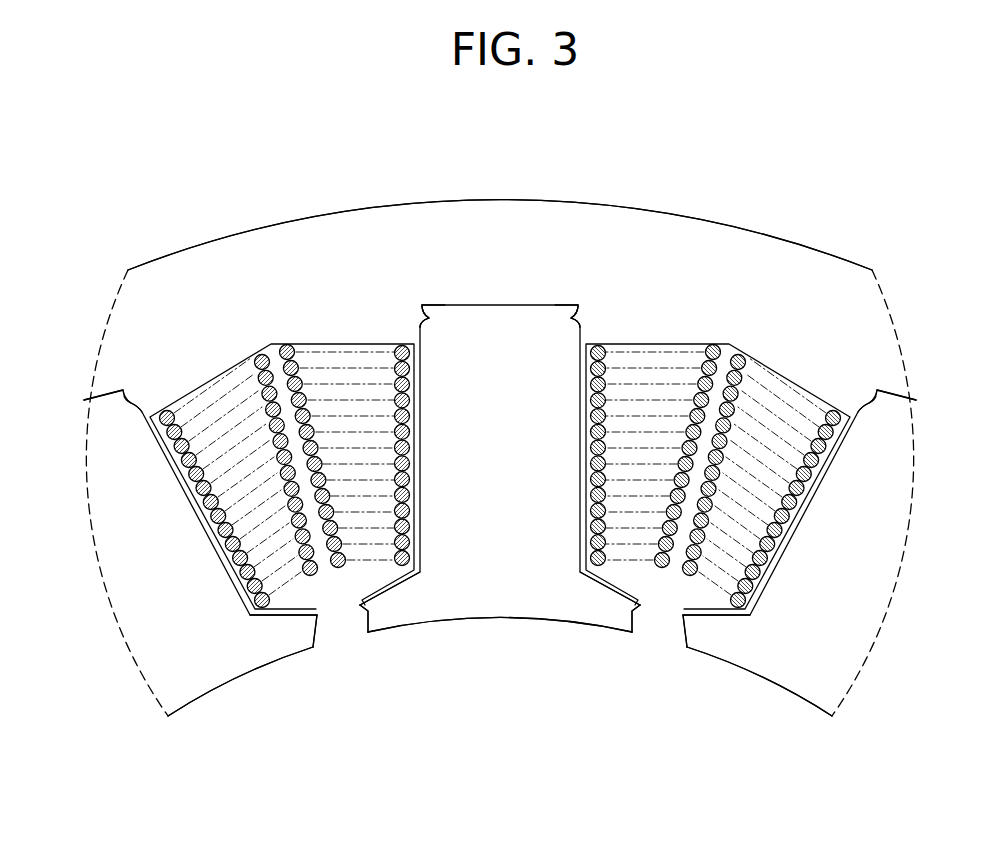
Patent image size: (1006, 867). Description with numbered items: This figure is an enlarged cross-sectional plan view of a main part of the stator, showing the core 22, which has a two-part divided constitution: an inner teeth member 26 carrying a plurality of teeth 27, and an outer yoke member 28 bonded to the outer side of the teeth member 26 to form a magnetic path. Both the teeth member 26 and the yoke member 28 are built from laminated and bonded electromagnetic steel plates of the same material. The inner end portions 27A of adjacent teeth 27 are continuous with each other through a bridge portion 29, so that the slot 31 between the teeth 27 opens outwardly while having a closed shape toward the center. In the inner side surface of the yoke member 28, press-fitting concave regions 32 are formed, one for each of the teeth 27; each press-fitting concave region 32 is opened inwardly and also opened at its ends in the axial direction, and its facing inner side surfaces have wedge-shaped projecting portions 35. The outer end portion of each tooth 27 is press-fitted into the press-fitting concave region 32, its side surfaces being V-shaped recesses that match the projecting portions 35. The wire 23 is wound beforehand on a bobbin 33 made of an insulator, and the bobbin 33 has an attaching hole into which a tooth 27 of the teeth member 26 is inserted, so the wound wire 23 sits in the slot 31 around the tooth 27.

The core 22 is at (446, 197).
The wire 23 is at (250, 362).
The teeth member 26 is at (417, 630).
The teeth 27 is at (84, 400).
The inner end portions 27A is at (185, 718).
The yoke member 28 is at (619, 205).
The bridge portion 29 is at (345, 640).
The slot 31 is at (350, 606).
The press-fitting concave region 32 is at (125, 386).
The bobbin 33 is at (195, 385).
The projecting portions 35 is at (128, 390).